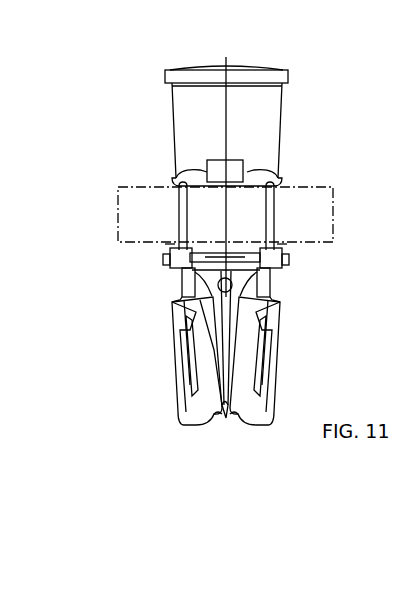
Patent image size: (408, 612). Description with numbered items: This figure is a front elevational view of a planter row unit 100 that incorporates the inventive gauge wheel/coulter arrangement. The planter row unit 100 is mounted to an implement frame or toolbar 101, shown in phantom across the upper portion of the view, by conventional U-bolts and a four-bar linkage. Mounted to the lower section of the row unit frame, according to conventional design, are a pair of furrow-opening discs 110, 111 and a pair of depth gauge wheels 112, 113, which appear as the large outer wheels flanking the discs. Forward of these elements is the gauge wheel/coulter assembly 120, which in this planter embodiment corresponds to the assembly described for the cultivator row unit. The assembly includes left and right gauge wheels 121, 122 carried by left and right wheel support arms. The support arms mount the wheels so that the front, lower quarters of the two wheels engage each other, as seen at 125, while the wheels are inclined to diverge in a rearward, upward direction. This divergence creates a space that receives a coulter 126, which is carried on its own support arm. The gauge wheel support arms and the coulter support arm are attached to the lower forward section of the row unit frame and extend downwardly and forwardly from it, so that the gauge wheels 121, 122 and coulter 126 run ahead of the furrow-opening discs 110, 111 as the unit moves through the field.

The planter row unit 100 is at (290, 116).
The implement frame or toolbar 101 is at (322, 212).
The furrow-opening disc 110 is at (229, 422).
The furrow-opening disc 111 is at (223, 420).
The depth gauge wheel 112 is at (263, 368).
The depth gauge wheel 113 is at (187, 370).
The gauge wheel/coulter assembly 120 is at (206, 389).
The left gauge wheel 121 is at (243, 313).
The right gauge wheel 122 is at (183, 303).
The wheel engagement point 125 is at (218, 366).
The coulter 126 is at (225, 423).